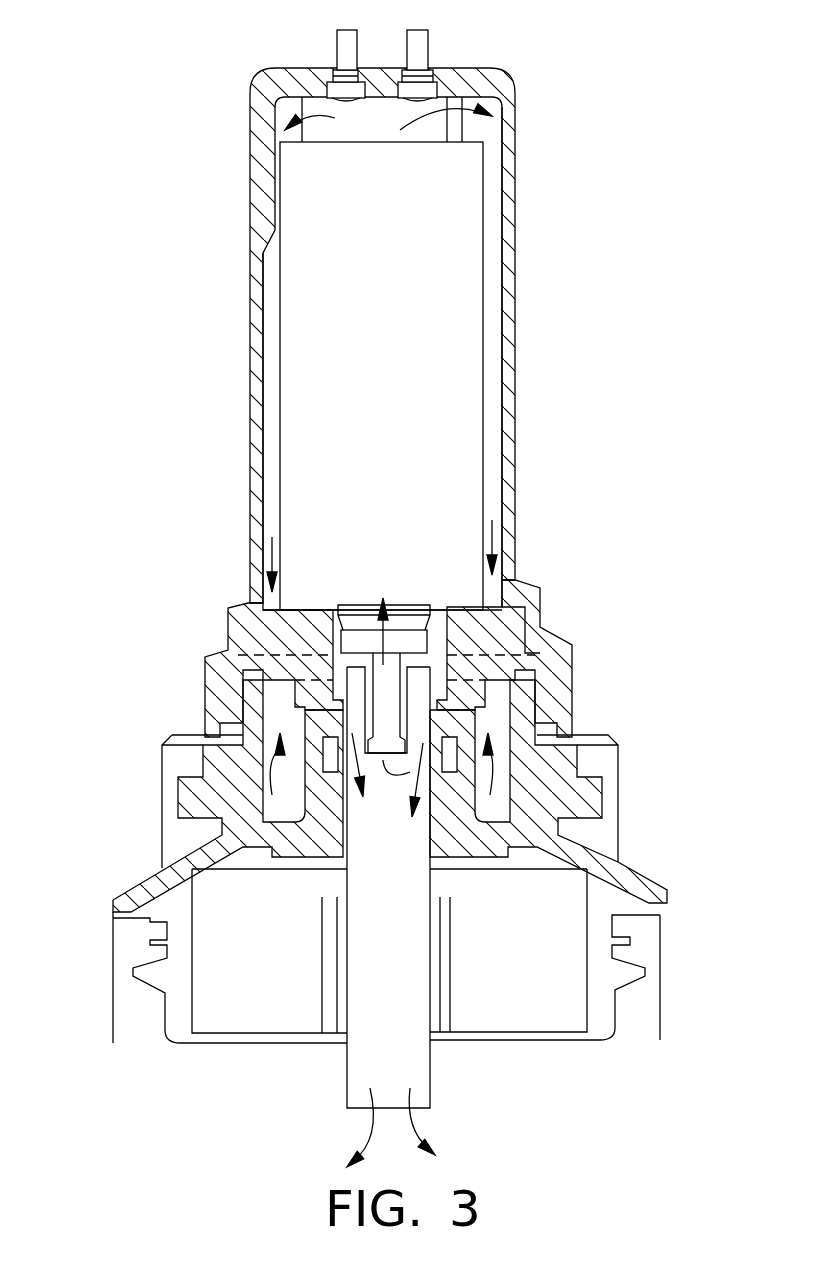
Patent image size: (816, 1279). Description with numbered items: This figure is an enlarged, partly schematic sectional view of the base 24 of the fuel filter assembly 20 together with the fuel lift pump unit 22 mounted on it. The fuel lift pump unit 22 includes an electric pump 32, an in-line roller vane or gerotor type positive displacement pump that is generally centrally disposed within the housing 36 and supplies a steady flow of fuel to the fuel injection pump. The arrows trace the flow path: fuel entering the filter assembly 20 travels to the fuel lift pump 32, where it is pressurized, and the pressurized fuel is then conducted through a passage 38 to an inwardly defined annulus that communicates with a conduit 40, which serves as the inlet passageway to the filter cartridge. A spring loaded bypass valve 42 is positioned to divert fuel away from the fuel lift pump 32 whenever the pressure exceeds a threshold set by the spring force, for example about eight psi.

The fuel filter assembly 20 is at (110, 666).
The fuel lift pump unit 22 is at (222, 268).
The base 24 is at (660, 886).
The electric pump 32 is at (406, 348).
The housing 36 is at (250, 399).
The passage 38 is at (488, 428).
The conduit 40 is at (432, 1078).
The spring loaded bypass valve 42 is at (570, 660).